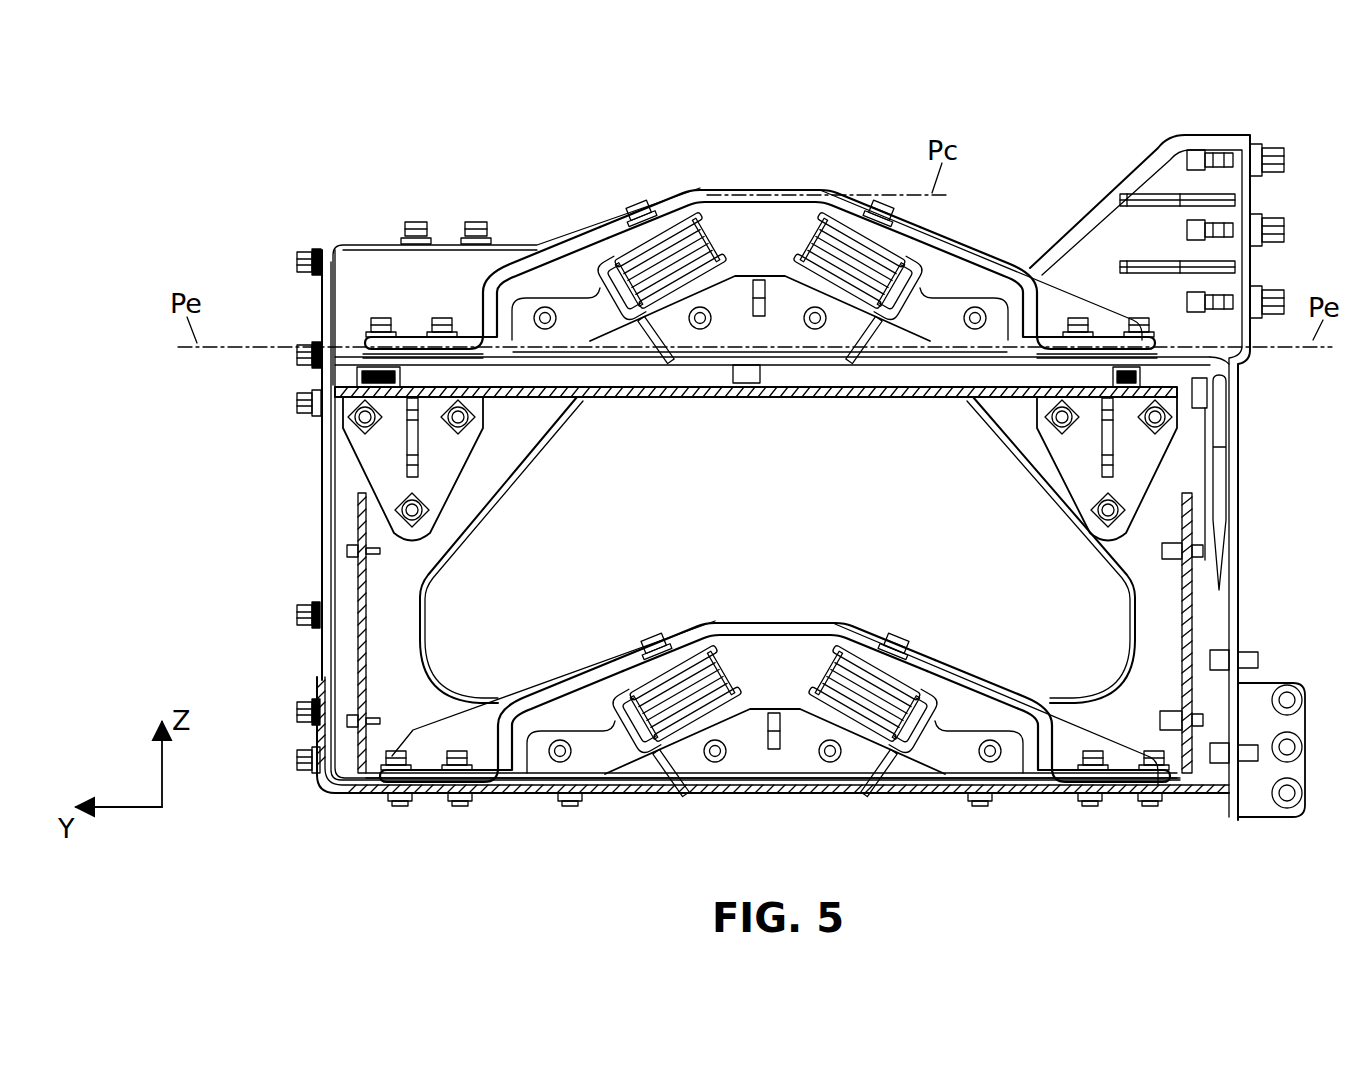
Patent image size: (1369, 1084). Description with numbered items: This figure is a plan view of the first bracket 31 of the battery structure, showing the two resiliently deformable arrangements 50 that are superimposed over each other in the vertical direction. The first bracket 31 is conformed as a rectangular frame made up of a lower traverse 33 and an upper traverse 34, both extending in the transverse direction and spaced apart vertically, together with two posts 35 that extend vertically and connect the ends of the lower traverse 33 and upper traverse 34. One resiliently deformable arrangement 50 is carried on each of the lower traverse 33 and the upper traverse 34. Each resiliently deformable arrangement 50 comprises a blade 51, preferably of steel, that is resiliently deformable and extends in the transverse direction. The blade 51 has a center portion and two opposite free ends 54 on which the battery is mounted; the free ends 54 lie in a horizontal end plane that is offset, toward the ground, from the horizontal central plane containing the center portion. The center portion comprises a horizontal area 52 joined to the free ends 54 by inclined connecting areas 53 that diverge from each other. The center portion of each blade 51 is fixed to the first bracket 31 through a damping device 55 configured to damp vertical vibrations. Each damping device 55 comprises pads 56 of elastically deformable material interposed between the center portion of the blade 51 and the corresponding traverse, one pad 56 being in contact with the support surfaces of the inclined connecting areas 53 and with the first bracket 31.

The first bracket 31 is at (300, 813).
The lower traverse 33 is at (737, 782).
The upper traverse 34 is at (737, 343).
The post 35 is at (1210, 615).
The resiliently deformable arrangement 50 is at (751, 463).
The blade 51 is at (745, 446).
The horizontal area 52 is at (735, 624).
The inclined connecting area 53 is at (927, 683).
The free end 54 is at (1113, 785).
The damping device 55 is at (640, 303).
The pad 56 is at (857, 704).